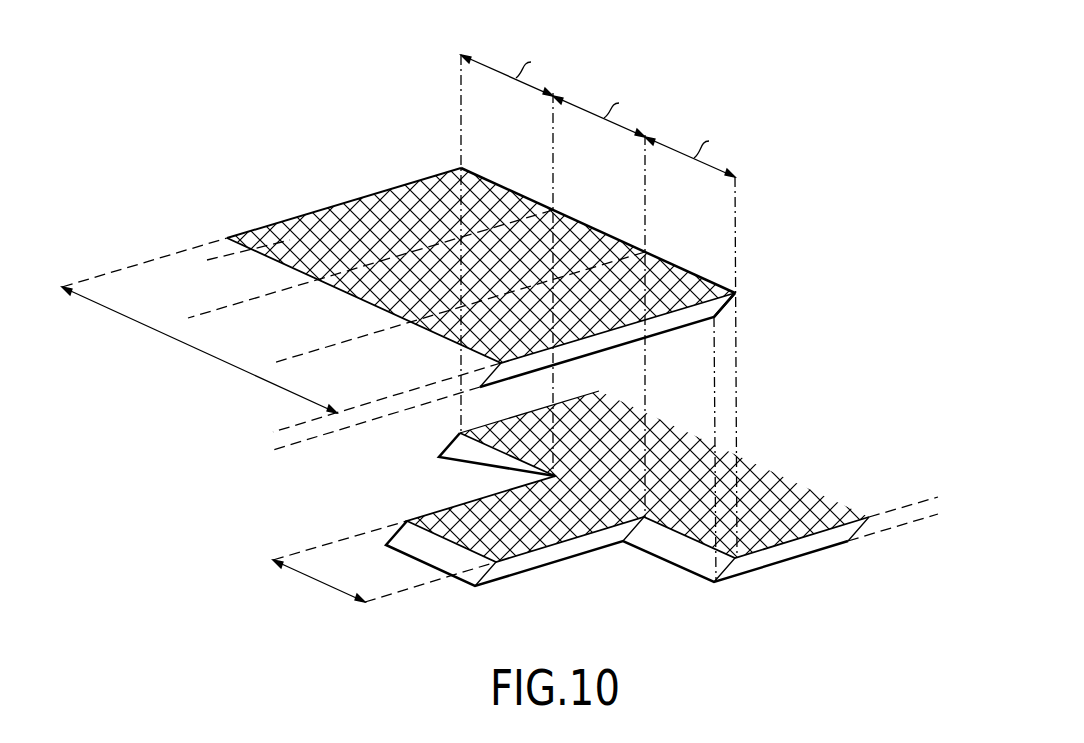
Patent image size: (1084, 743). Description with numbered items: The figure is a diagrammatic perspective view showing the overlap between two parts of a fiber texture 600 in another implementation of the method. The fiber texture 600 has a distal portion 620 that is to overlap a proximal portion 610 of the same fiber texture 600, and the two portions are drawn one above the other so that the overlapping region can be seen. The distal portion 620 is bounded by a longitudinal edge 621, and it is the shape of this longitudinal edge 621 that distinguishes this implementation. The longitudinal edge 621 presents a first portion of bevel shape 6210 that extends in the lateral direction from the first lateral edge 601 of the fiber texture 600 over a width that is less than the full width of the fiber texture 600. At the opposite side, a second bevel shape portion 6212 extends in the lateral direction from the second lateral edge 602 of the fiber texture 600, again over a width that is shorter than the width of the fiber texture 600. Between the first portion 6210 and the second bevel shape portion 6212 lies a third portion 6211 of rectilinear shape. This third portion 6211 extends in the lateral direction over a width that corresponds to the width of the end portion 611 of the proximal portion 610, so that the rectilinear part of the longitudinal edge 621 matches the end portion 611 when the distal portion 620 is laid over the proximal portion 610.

The fiber texture 600 is at (500, 350).
The distal portion 620 is at (427, 314).
The proximal portion 610 is at (605, 522).
The end portion 611 is at (473, 525).
The longitudinal edge 621 is at (733, 301).
The first lateral edge 601 is at (670, 320).
The second lateral edge 602 is at (383, 191).
The second bevel shape portion 6212 is at (513, 159).
The third portion 6211 is at (595, 226).
The first portion of bevel shape 6210 is at (673, 263).